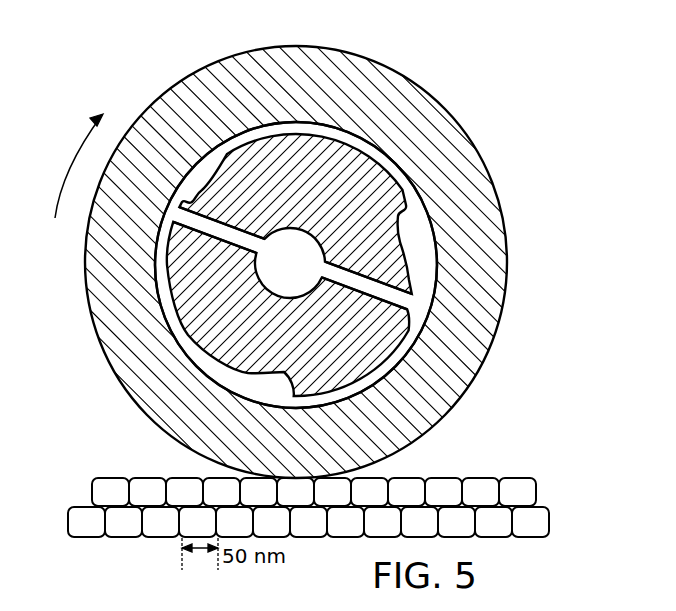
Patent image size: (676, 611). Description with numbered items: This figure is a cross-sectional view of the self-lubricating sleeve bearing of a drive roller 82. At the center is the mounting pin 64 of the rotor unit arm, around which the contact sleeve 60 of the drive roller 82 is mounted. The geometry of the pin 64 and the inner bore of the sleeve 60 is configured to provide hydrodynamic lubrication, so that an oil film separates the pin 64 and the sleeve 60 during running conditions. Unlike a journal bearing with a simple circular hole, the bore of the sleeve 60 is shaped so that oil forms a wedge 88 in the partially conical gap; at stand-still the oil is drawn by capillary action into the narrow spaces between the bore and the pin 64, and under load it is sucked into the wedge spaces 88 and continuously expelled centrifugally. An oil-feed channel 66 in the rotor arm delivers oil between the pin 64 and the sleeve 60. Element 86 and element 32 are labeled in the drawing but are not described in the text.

The contact sleeve 60 is at (457, 121).
The inner ring 86 is at (369, 153).
The wedge 88 is at (292, 121).
The mounting pin 64 is at (380, 222).
The oil-feed channel 66 is at (383, 294).
The array of nanoparticles 32 is at (523, 476).
The drive roller 82 is at (58, 112).